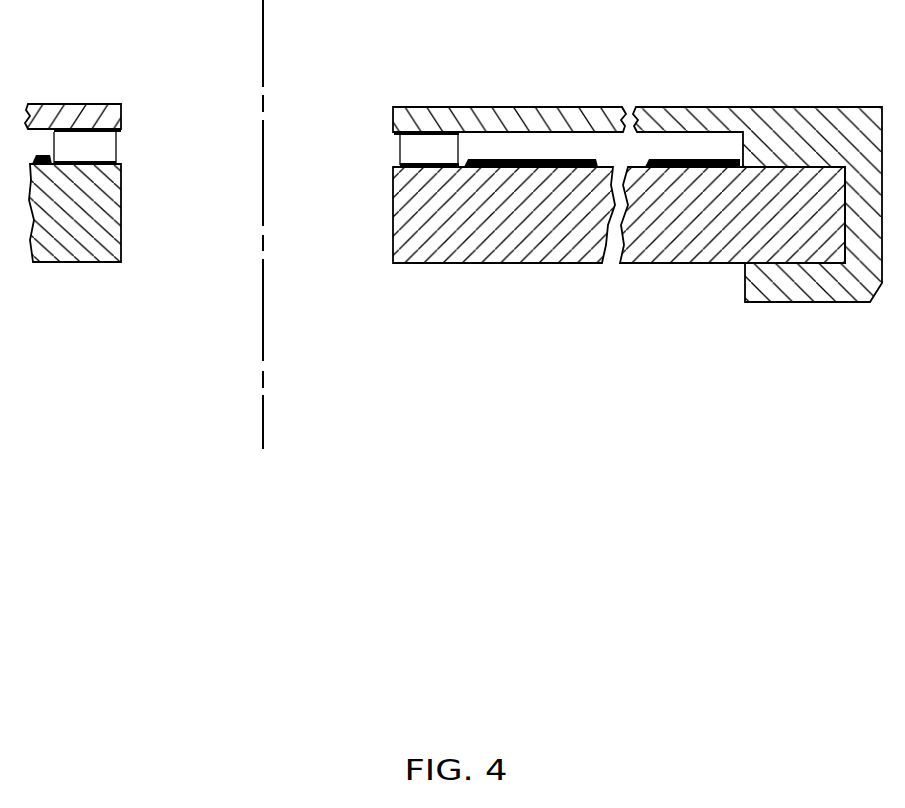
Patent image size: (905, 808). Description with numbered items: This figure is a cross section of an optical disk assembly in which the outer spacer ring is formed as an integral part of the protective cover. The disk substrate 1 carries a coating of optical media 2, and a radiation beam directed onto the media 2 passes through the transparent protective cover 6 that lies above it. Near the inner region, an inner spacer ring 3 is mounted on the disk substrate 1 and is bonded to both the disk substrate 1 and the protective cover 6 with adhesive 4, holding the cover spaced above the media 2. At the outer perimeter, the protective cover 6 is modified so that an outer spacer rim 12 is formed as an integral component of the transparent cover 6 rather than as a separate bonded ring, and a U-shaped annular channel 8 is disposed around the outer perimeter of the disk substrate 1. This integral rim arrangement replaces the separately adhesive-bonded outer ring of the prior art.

The disk substrate 1 is at (438, 250).
The optical media 2 is at (503, 158).
The inner spacer ring 3 is at (448, 145).
The adhesive 4 is at (400, 147).
The protective cover 6 is at (580, 118).
The U-shaped annular channel 8 is at (845, 208).
The outer spacer rim 12 is at (881, 108).